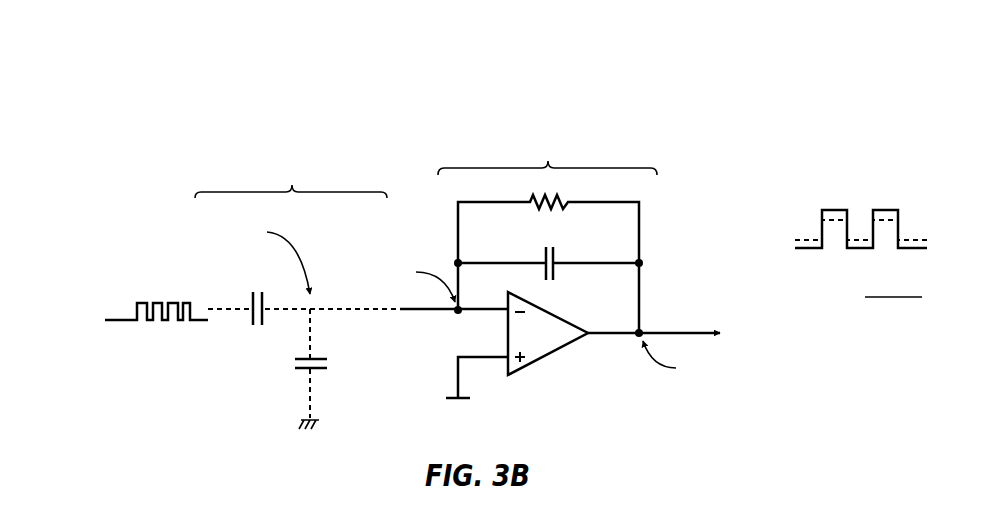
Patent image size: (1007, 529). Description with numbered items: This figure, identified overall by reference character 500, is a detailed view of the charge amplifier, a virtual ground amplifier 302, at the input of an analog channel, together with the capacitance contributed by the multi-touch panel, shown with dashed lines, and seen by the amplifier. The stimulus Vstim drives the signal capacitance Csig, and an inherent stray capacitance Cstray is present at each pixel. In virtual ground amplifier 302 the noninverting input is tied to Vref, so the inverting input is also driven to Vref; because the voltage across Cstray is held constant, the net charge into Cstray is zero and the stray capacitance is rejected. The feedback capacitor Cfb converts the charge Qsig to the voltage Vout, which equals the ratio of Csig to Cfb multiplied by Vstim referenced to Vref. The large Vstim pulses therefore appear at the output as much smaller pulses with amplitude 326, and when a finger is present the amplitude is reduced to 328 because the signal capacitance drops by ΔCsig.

The touch sensing circuit / system 500 is at (780, 49).
The virtual ground amplifier 302 is at (537, 243).
The output pulse amplitude without touch 326 is at (833, 208).
The reduced output amplitude with touch 328 is at (889, 223).